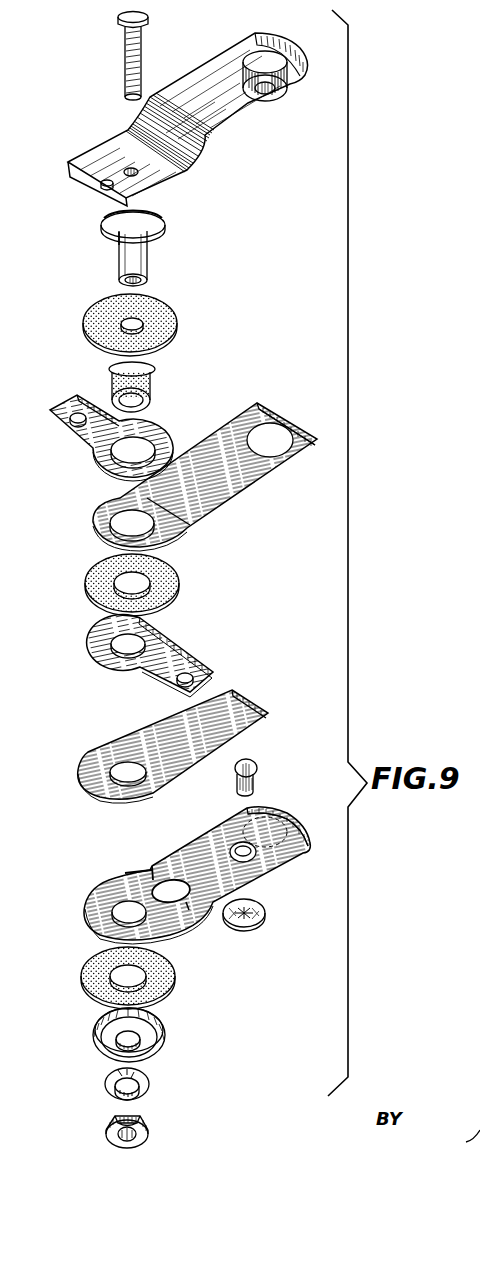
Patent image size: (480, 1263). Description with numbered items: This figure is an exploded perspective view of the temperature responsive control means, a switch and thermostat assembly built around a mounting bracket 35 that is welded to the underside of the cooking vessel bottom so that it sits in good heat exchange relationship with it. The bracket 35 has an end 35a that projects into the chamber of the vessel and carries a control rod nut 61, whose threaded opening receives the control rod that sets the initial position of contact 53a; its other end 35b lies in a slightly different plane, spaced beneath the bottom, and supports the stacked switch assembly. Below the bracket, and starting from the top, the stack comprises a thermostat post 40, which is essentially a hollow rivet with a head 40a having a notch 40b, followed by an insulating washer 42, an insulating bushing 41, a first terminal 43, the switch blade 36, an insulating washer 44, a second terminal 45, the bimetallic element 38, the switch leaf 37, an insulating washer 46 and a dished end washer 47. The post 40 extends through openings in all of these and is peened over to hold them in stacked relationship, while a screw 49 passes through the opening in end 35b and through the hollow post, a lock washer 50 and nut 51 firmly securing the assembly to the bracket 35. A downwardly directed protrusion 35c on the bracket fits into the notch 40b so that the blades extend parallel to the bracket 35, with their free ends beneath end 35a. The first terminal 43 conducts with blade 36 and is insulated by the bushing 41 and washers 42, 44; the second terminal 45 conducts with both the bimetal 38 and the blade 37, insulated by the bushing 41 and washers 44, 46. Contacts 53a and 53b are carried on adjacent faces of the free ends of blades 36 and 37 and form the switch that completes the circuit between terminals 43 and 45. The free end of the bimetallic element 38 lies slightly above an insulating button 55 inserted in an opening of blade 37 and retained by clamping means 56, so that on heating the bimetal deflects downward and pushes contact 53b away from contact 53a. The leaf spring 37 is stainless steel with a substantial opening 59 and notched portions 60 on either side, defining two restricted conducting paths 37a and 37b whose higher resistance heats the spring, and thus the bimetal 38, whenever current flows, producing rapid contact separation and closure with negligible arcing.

The mounting bracket 35 is at (186, 104).
The end of bracket 35a is at (250, 36).
The end of bracket 35b is at (110, 143).
The downwardly directed protrusion 35c is at (103, 184).
The switch blade 36 is at (209, 475).
The switch blade 37 is at (204, 868).
The restricted conducting path 37a is at (155, 867).
The restricted conducting path 37b is at (199, 889).
The bimetallic element 38 is at (267, 716).
The thermostat post 40 is at (129, 245).
The head 40a is at (107, 225).
The notch 40b is at (118, 247).
The insulating bushing 41 is at (148, 390).
The insulating washer 42 is at (88, 308).
The first terminal 43 is at (103, 467).
The insulating washer 44 is at (173, 580).
The second terminal 45 is at (168, 634).
The insulating washer 46 is at (90, 962).
The dished end washer 47 is at (163, 1027).
The screw 49 is at (125, 47).
The lock washer 50 is at (145, 1084).
The nut 51 is at (147, 1127).
The contact 53a is at (280, 437).
The contact 53b is at (280, 821).
The insulating button 55 is at (257, 775).
The clamping means 56 is at (263, 905).
The opening 59 is at (166, 897).
The notched portions 60 is at (137, 869).
The control rod nut 61 is at (287, 76).